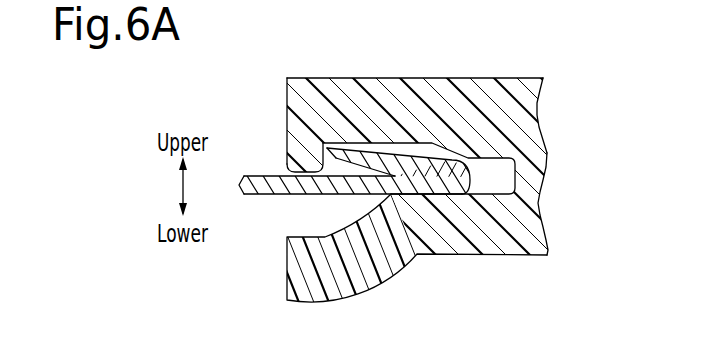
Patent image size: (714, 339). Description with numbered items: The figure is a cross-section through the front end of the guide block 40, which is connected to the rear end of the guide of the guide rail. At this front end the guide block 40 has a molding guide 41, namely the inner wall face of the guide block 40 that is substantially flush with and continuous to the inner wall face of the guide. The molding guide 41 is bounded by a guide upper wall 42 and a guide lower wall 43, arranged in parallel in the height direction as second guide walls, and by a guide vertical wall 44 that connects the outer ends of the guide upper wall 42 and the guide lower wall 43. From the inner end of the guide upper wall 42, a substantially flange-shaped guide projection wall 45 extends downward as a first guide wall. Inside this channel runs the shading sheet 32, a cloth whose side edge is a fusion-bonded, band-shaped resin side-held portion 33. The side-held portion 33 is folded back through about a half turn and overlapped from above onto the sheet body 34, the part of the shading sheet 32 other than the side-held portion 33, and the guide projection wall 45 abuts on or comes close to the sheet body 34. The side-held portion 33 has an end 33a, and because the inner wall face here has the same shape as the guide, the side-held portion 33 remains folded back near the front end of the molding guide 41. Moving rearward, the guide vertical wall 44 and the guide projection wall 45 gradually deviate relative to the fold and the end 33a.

The shading sheet 32 is at (349, 142).
The side-held portion 33 is at (347, 117).
The end 33a is at (287, 120).
The sheet body 34 is at (254, 197).
The guide block 40 is at (357, 169).
The molding guide 41 is at (528, 133).
The guide upper wall 42 is at (392, 78).
The guide lower wall 43 is at (371, 289).
The guide vertical wall 44 is at (549, 156).
The guide projection wall 45 is at (287, 137).